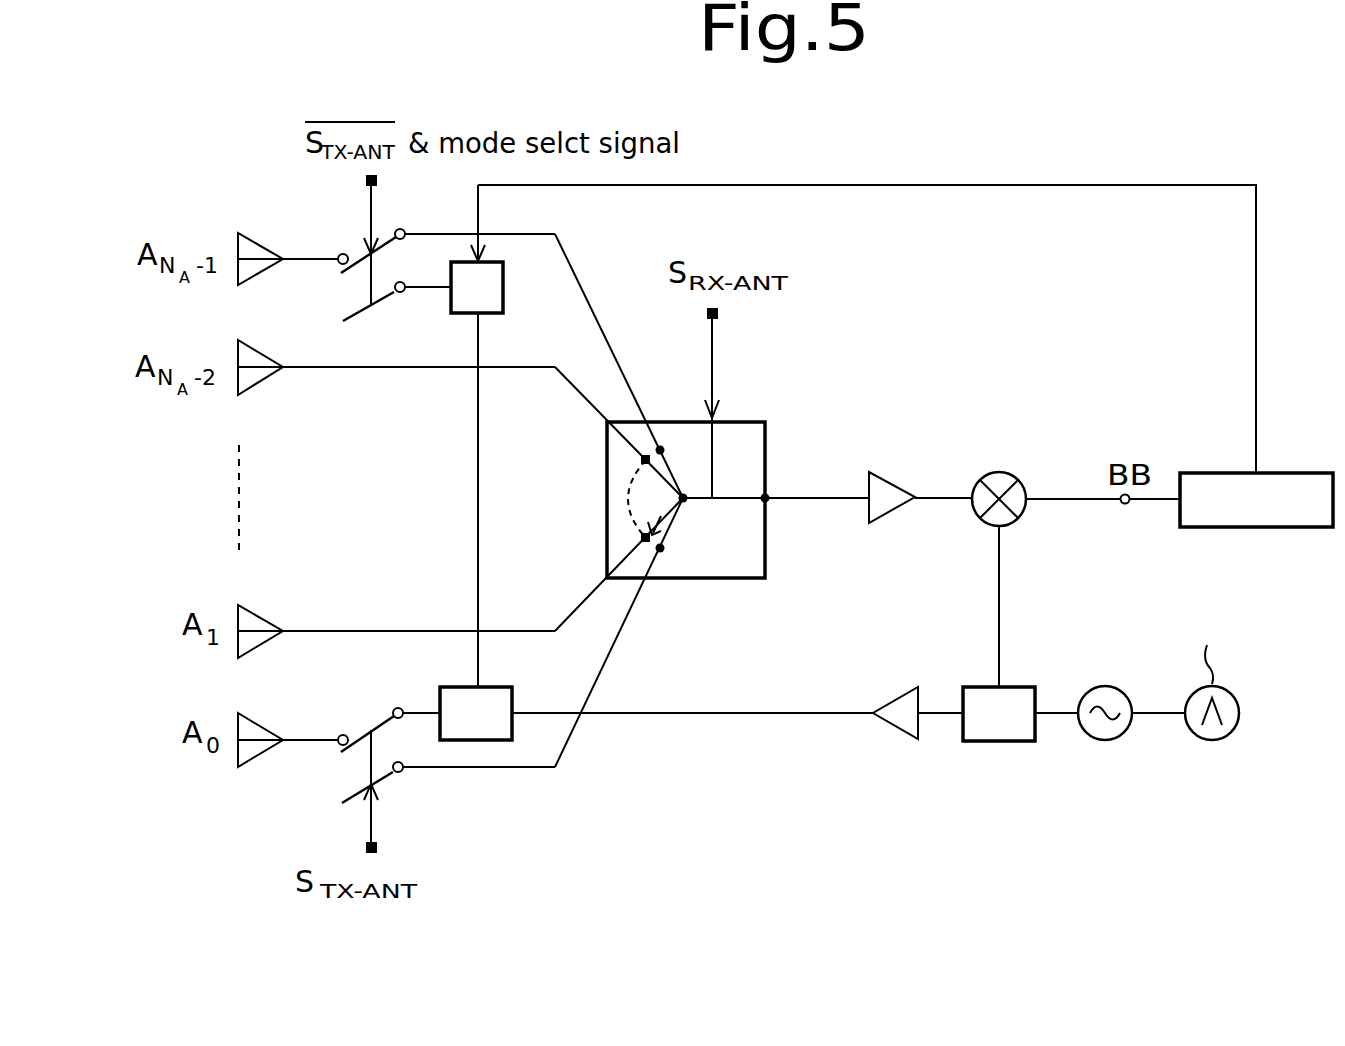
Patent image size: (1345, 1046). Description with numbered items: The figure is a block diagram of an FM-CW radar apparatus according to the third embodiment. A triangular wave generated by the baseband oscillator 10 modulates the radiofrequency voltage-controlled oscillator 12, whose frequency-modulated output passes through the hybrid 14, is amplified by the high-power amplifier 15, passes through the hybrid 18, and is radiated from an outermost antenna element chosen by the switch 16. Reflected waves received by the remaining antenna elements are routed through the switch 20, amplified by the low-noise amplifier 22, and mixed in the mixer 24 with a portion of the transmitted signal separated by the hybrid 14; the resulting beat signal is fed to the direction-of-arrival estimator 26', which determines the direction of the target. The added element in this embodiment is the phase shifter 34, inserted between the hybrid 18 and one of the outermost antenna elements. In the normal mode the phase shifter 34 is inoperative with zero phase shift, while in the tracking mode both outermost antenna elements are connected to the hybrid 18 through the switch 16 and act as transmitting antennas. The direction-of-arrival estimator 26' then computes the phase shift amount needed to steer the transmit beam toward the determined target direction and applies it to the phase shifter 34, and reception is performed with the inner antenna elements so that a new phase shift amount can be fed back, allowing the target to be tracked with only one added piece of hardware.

The baseband oscillator 10 is at (1213, 740).
The radiofrequency voltage-controlled oscillator 12 is at (1103, 740).
The hybrid 14 is at (993, 742).
The high-power amplifier 15 is at (893, 728).
The switch 16 is at (398, 212).
The hybrid 18 is at (492, 687).
The switch 20 is at (747, 433).
The low-noise amplifier 22 is at (890, 512).
The mixer 24 is at (1026, 508).
The direction-of-arrival estimator 26' is at (1257, 462).
The phase shifter 34 is at (503, 290).